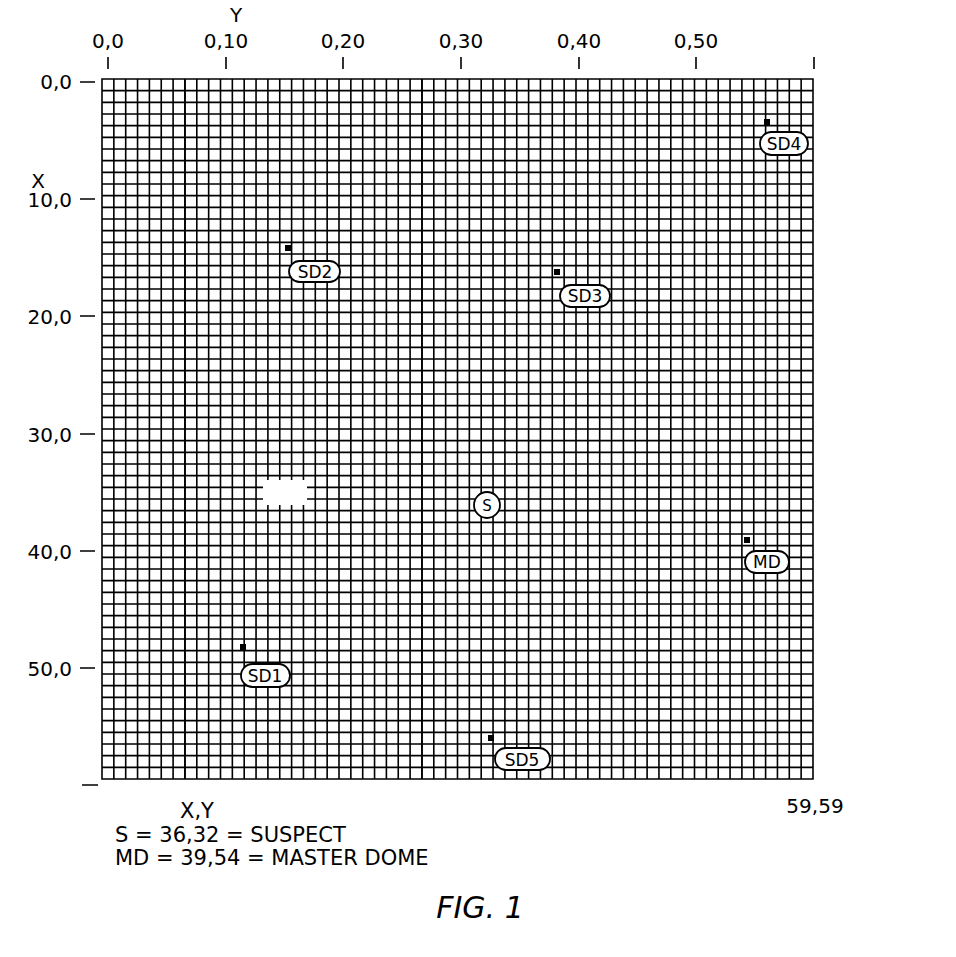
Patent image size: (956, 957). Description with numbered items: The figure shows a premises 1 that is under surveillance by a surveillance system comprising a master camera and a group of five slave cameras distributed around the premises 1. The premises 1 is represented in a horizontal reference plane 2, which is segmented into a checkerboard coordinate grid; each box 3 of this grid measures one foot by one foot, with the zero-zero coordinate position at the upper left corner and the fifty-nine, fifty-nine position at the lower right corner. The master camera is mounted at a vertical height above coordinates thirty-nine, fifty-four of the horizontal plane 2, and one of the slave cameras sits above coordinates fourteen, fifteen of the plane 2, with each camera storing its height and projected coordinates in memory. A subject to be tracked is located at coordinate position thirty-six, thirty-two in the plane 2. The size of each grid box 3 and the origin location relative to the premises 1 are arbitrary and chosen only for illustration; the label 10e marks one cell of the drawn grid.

The premises 1 is at (619, 783).
The horizontal reference plane 2 is at (420, 110).
The box 3 is at (185, 92).
The grid cell 10e is at (300, 500).